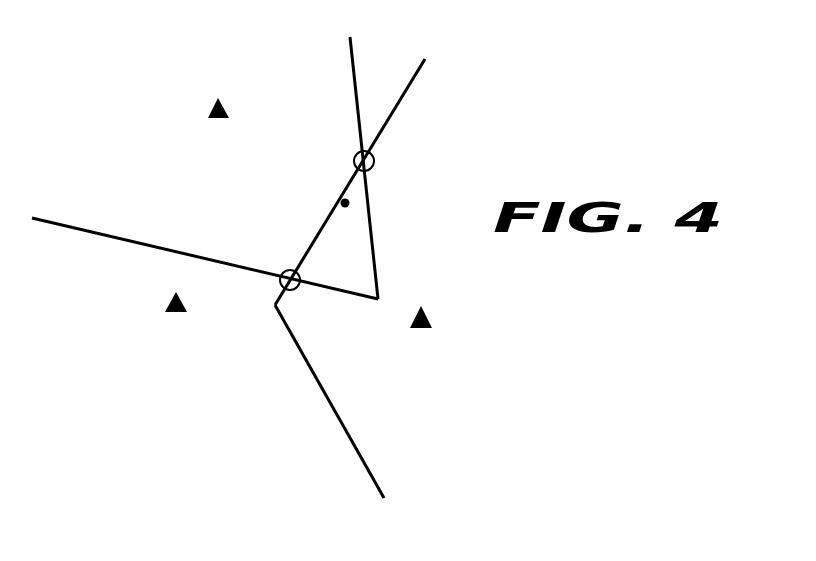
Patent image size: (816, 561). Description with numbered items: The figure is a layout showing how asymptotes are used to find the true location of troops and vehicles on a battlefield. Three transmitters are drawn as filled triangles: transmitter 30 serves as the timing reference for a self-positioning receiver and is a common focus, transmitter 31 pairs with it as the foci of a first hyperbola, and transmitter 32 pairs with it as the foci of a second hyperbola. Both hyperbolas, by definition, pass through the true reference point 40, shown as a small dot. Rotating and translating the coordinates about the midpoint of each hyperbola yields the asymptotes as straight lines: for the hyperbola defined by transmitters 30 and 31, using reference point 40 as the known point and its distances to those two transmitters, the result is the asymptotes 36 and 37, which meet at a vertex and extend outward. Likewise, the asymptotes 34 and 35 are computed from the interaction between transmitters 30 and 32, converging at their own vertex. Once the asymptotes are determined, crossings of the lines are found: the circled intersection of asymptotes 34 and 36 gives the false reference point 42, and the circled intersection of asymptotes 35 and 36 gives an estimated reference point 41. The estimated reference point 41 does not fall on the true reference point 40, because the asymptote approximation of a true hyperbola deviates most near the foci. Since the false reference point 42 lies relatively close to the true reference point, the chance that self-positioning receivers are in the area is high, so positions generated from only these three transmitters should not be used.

The transmitter 30 is at (425, 331).
The transmitter 31 is at (176, 315).
The transmitter 32 is at (213, 105).
The asymptote 34 is at (88, 234).
The asymptote 35 is at (350, 70).
The asymptote 36 is at (417, 80).
The asymptote 37 is at (359, 452).
The reference point 40 is at (347, 209).
The estimated reference point 41 is at (353, 162).
The false reference point 42 is at (285, 272).